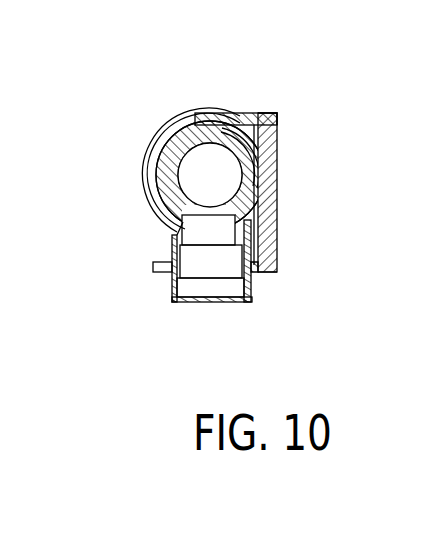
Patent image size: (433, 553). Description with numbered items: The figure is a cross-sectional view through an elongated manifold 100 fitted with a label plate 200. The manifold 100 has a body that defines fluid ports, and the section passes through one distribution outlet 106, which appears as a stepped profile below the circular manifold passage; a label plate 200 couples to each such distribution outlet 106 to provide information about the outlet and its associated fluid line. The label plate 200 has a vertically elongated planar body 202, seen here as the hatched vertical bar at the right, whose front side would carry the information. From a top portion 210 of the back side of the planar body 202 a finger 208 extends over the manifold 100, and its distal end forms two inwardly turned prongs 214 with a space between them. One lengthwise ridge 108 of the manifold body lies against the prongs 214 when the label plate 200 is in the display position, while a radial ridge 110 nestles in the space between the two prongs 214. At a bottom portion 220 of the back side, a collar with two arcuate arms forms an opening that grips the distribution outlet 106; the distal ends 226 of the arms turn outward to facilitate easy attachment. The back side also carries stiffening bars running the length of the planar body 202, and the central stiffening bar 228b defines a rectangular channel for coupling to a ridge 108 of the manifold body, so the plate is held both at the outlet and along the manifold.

The manifold 100 is at (215, 190).
The distribution outlet 106 is at (207, 270).
The ridge 108 is at (227, 114).
The radial ridge 110 is at (193, 115).
The label plate 200 is at (248, 196).
The planar body 202 is at (279, 141).
The finger 208 is at (257, 113).
The top portion 210 is at (279, 116).
The prong 214 is at (167, 122).
The bottom portion 220 is at (268, 273).
The distal end 226 is at (163, 273).
The central stiffening bar 228b is at (276, 190).